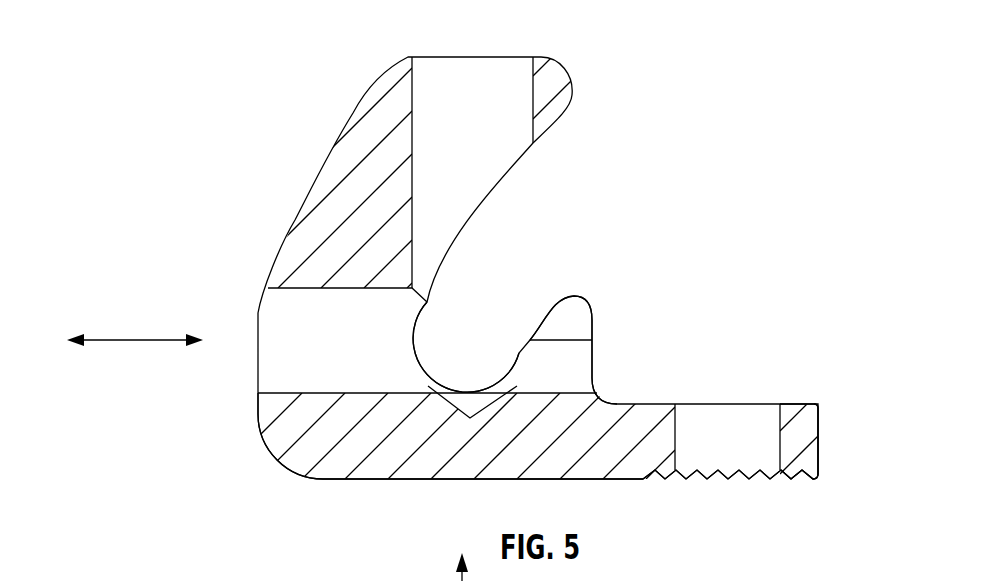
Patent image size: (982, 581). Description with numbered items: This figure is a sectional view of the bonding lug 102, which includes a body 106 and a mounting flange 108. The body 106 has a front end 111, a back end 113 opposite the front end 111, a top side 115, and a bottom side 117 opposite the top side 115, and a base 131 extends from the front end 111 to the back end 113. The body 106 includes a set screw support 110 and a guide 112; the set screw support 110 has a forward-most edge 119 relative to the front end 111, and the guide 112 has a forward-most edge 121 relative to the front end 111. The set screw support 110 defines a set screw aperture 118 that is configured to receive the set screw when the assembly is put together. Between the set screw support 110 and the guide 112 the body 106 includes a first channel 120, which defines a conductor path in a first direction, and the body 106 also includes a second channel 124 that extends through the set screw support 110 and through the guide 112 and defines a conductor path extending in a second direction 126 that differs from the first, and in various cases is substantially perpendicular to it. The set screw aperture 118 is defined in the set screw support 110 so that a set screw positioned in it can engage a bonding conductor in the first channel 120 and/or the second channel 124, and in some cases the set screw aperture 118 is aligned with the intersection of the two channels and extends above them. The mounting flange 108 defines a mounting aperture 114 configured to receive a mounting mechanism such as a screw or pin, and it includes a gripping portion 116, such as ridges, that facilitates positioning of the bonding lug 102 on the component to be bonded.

The bonding lug 102 is at (150, 135).
The body 106 is at (313, 440).
The mounting flange 108 is at (800, 460).
The set screw support 110 is at (340, 170).
The front end 111 is at (822, 427).
The guide 112 is at (578, 313).
The back end 113 is at (255, 413).
The mounting aperture 114 is at (723, 413).
The top side 115 is at (787, 403).
The gripping portion 116 is at (705, 478).
The bottom side 117 is at (645, 479).
The set screw aperture 118 is at (425, 117).
The forward-most edge 119 is at (572, 98).
The first channel 120 is at (453, 381).
The forward-most edge 121 is at (593, 348).
The second channel 124 is at (280, 327).
The second direction 126 is at (148, 339).
The base 131 is at (380, 453).